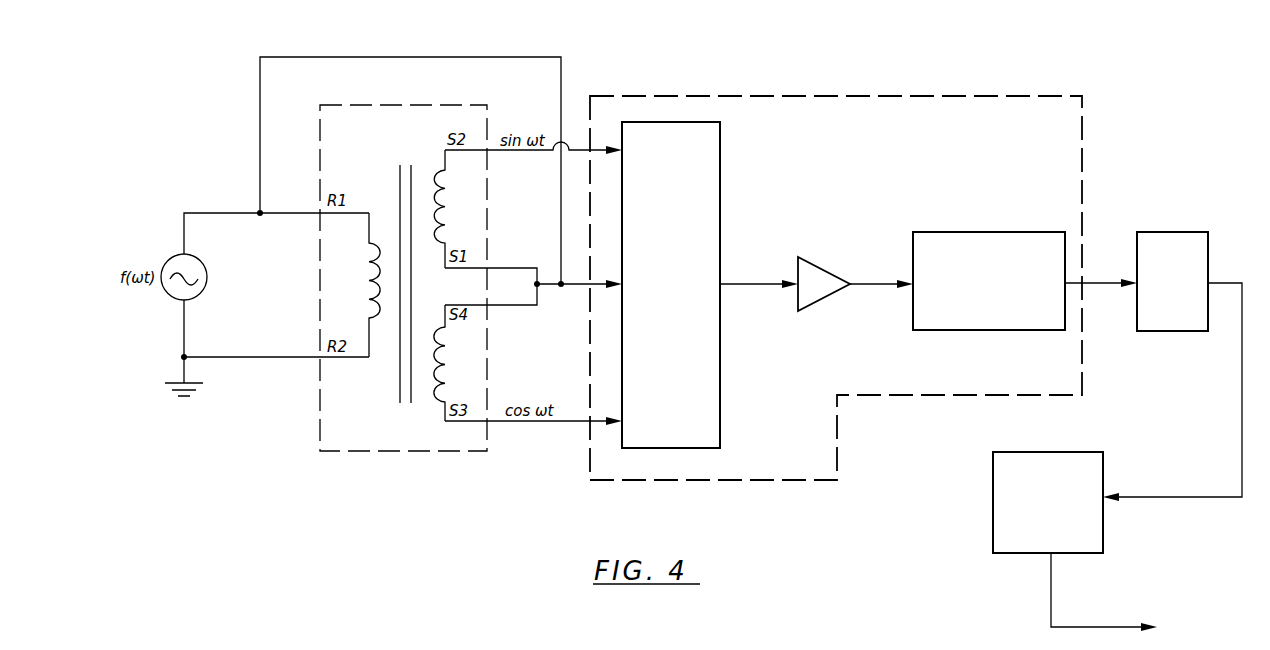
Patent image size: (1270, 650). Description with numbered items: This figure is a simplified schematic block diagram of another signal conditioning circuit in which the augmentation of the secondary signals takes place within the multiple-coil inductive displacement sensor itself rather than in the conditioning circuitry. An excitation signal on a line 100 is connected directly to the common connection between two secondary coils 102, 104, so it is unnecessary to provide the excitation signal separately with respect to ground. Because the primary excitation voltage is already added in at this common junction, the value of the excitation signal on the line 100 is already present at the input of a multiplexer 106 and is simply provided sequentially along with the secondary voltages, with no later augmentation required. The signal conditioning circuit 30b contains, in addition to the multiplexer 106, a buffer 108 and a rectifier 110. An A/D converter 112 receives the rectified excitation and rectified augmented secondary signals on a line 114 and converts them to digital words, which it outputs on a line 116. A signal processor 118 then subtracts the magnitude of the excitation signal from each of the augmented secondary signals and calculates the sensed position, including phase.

The line 100 is at (333, 57).
The secondary coil 102 is at (446, 212).
The secondary coil 104 is at (440, 353).
The multiplexer 106 is at (720, 371).
The buffer 108 is at (823, 264).
The rectifier 110 is at (950, 232).
The A/D converter 112 is at (1184, 203).
The line 114 is at (1090, 281).
The line 116 is at (1237, 390).
The signal processor 118 is at (1103, 473).
The signal conditioning circuit 30b is at (897, 97).